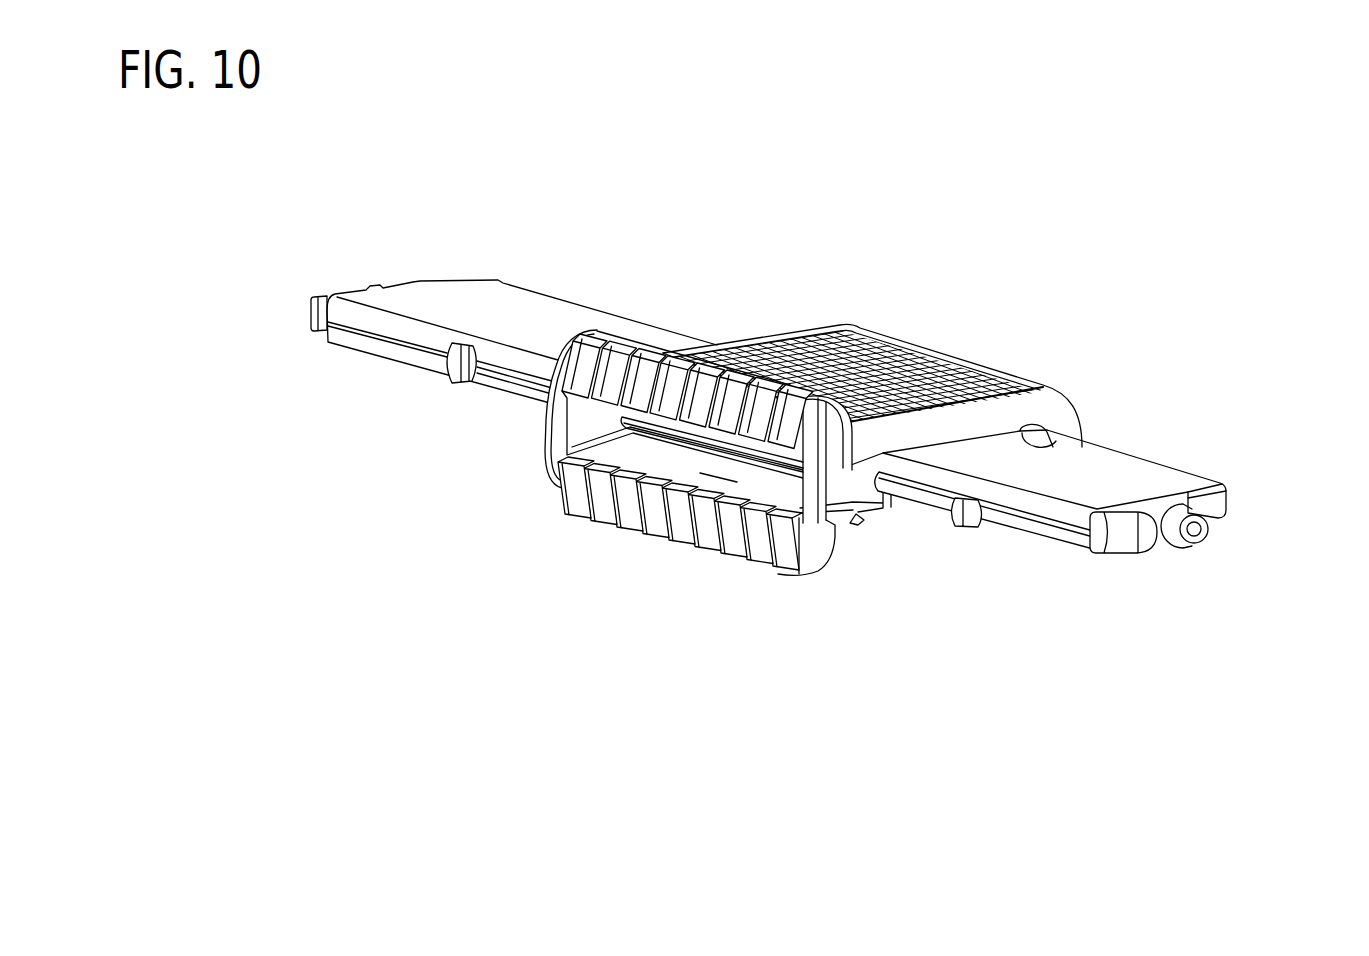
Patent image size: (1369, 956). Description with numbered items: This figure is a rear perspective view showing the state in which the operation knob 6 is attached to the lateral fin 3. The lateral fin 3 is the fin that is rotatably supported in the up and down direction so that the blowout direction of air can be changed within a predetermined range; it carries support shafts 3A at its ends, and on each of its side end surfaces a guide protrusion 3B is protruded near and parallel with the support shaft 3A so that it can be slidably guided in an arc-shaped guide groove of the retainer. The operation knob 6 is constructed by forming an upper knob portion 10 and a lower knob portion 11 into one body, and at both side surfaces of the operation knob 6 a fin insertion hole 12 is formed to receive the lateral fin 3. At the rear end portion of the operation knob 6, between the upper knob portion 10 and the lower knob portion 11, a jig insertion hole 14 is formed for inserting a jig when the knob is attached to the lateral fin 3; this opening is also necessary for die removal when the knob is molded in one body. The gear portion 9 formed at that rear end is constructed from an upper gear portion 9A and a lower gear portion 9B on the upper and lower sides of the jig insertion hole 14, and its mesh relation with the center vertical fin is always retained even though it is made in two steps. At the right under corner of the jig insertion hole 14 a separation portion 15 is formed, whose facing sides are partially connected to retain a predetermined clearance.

The lateral fin 3 is at (1166, 481).
The support shaft 3A is at (1202, 528).
The guide protrusion 3B is at (316, 316).
The operation knob 6 is at (987, 293).
The gear portion 9 is at (609, 587).
The upper gear portion 9A is at (617, 401).
The lower gear portion 9B is at (609, 511).
The upper knob portion 10 is at (846, 333).
The lower knob portion 11 is at (912, 515).
The fin insertion hole 12 is at (1049, 446).
The jig insertion hole 14 is at (733, 491).
The separation portion 15 is at (862, 531).